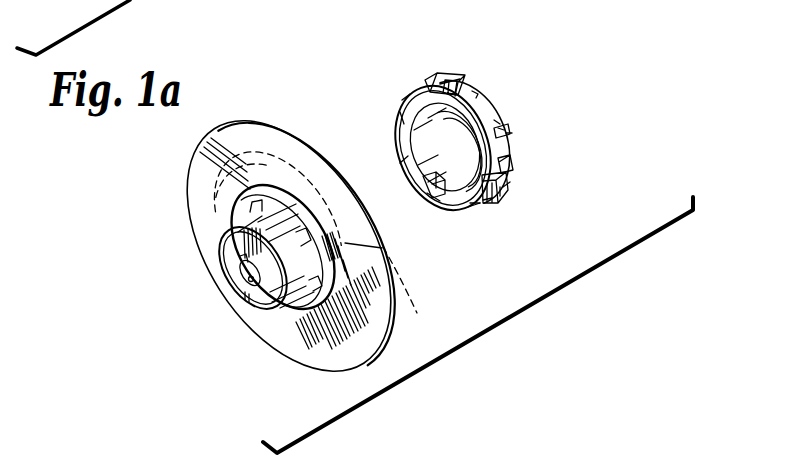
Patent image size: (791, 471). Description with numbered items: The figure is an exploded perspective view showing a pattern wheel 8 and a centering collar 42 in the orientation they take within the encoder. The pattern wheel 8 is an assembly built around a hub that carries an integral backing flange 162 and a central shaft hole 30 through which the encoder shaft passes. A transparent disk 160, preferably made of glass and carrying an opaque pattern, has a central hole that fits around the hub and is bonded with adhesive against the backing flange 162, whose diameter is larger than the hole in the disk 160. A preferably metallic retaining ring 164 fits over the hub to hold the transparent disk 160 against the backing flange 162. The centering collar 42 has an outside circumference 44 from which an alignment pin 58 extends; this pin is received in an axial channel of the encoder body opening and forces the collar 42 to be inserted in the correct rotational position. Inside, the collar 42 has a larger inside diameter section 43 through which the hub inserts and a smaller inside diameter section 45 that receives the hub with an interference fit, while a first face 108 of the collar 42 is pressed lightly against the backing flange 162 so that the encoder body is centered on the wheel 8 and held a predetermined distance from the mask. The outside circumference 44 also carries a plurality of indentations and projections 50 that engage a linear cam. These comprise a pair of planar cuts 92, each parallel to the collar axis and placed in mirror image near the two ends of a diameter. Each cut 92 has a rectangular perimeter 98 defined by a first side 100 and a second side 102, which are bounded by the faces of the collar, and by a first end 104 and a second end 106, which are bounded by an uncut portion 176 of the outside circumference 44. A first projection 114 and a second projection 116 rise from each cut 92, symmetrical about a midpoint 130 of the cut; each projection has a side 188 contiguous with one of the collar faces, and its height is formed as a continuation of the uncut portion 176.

The pattern wheel 8 is at (143, 230).
The central shaft hole 30 is at (247, 258).
The centering collar 42 is at (489, 65).
The larger inside diameter section 43 is at (427, 193).
The outside circumference 44 is at (478, 95).
The smaller inside diameter section 45 is at (404, 168).
The plurality of indentations and projections 50 is at (513, 134).
The alignment pin 58 is at (441, 78).
The planar cuts 92 is at (500, 188).
The perimeter 98 is at (470, 203).
The first side 100 is at (467, 212).
The second side 102 is at (508, 133).
The first end 104 is at (483, 200).
The second end 106 is at (500, 130).
The first face 108 is at (404, 116).
The first projection 114 is at (503, 187).
The second projection 116 is at (496, 124).
The midpoint 130 is at (515, 153).
The transparent disk 160 is at (291, 346).
The integral backing flange 162 is at (325, 230).
The retaining ring 164 is at (240, 198).
The uncut portion 176 is at (473, 82).
The side 188 is at (400, 112).